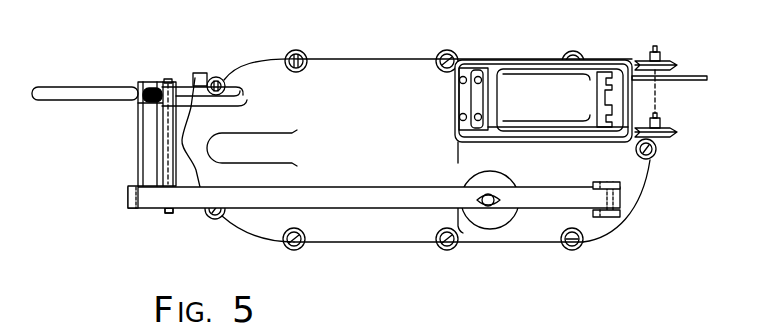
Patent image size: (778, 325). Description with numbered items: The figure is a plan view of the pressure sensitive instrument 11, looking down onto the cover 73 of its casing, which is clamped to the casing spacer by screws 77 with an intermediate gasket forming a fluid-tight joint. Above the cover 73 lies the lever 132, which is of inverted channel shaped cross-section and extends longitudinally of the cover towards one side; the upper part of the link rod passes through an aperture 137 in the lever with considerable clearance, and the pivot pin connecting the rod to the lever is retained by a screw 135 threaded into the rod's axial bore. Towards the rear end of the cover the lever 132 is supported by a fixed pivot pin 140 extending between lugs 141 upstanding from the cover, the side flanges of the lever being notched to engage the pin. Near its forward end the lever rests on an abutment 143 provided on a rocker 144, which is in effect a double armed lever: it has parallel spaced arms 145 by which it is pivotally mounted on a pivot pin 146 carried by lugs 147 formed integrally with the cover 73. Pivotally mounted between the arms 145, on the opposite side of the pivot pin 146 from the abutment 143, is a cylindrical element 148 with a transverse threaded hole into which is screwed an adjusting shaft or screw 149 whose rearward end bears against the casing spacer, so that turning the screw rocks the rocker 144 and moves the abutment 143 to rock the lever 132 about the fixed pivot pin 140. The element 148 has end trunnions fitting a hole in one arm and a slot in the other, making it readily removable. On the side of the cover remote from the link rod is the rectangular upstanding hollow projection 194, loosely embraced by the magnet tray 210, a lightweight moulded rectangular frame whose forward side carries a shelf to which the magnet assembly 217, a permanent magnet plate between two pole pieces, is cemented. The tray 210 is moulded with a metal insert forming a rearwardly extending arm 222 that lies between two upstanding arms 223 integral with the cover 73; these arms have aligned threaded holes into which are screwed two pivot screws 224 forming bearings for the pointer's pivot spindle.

The pressure sensitive instrument 11 is at (388, 243).
The cover 73 is at (522, 243).
The screws 77 is at (300, 50).
The lever 132 is at (190, 212).
The screw 135 is at (490, 190).
The aperture 137 is at (500, 203).
The fixed pivot pin 140 is at (605, 200).
The lugs 141 is at (618, 182).
The abutment 143 is at (128, 190).
The rocker 144 is at (137, 146).
The arms 145 is at (153, 80).
The pivot pin 146 is at (173, 213).
The lugs 147 is at (180, 80).
The element 148 is at (176, 165).
The adjusting shaft or screw 149 is at (82, 100).
The hollow projection 194 is at (547, 105).
The magnet tray 210 is at (478, 58).
The magnet assembly 217 is at (600, 109).
The arm 222 is at (703, 82).
The upstanding arms 223 is at (677, 65).
The pivot screws 224 is at (657, 46).